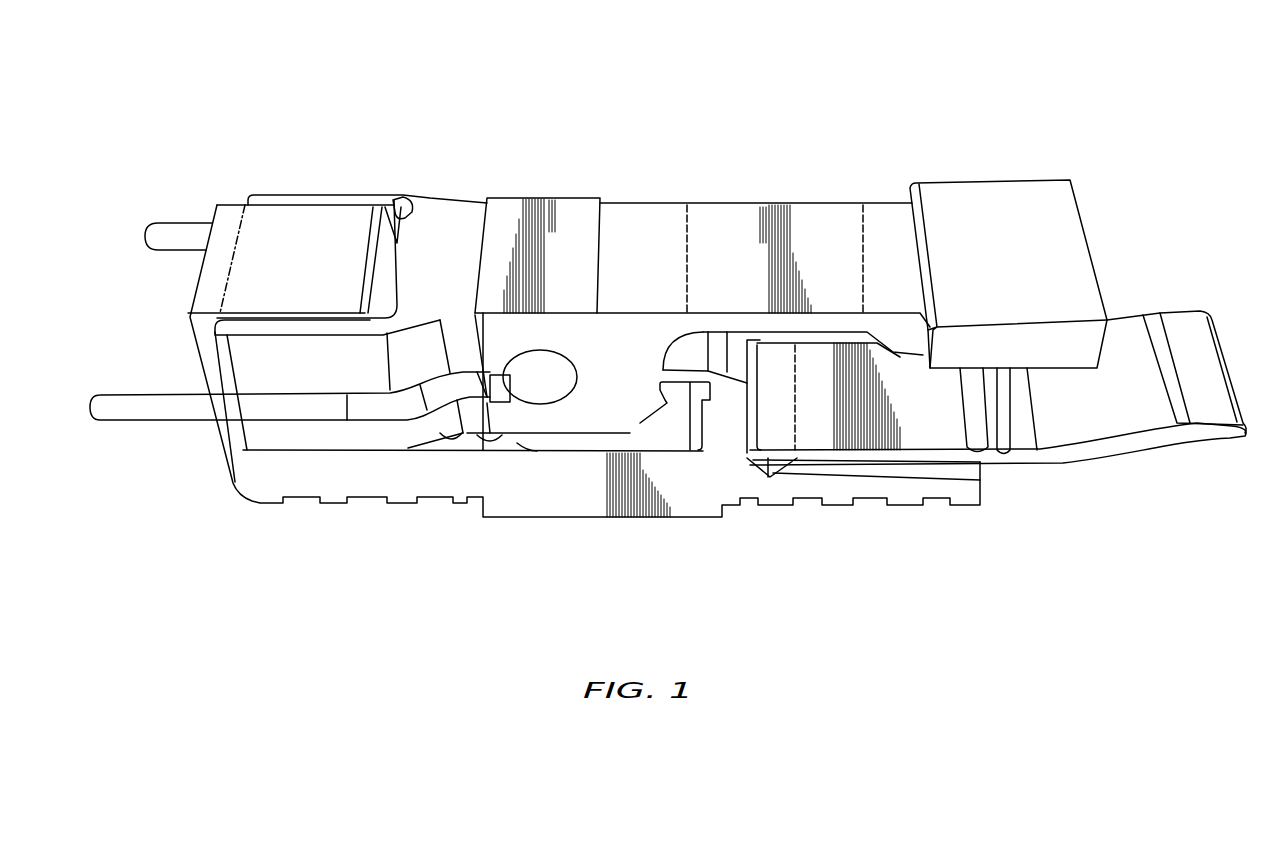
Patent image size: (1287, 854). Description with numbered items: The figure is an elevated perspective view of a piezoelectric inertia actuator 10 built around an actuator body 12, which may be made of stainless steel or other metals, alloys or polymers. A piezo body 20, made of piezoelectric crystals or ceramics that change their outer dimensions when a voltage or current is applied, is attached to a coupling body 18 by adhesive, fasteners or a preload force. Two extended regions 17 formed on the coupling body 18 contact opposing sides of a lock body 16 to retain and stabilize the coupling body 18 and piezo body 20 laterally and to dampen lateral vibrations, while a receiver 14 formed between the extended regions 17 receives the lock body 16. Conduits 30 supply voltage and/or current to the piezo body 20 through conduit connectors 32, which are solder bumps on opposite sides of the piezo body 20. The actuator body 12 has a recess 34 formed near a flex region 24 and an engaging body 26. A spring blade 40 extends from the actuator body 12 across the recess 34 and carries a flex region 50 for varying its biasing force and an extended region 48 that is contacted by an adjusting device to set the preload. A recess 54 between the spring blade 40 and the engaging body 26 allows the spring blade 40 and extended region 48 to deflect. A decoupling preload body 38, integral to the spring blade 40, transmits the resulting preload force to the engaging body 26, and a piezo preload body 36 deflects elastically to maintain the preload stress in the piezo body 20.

The piezoelectric inertia actuator 10 is at (1140, 168).
The actuator body 12 is at (340, 477).
The receiver 14 is at (397, 213).
The lock body 16 is at (304, 220).
The extended regions 17 is at (260, 194).
The coupling body 18 is at (445, 215).
The piezo body 20 is at (561, 220).
The flex region 24 is at (740, 218).
The engaging body 26 is at (985, 197).
The conduits 30 is at (170, 235).
The conduit connectors 32 is at (538, 388).
The recess 34 is at (815, 390).
The piezo preload body 36 is at (727, 410).
The decoupling preload body 38 is at (997, 400).
The spring blade 40 is at (1238, 590).
The extended region 48 is at (1197, 338).
The flex region 50 is at (770, 478).
The recess 54 is at (1053, 423).